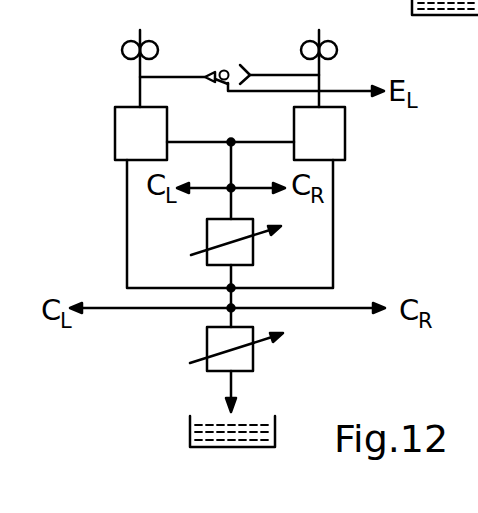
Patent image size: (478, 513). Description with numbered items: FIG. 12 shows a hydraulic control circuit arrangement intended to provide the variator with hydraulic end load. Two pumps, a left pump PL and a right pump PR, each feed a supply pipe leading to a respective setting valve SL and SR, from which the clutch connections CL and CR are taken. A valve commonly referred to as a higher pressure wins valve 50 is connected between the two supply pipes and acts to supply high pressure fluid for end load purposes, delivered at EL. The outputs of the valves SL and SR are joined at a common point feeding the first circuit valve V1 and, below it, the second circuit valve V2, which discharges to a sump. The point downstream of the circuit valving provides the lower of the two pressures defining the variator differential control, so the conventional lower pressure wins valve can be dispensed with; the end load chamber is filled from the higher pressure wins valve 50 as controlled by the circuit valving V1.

The higher pressure wins valve 50 is at (240, 65).
The left pump PL is at (124, 42).
The right pump PR is at (305, 43).
The left valve SL is at (115, 133).
The right valve SR is at (345, 130).
The first circuit valve V1 is at (253, 258).
The second circuit valve V2 is at (253, 367).